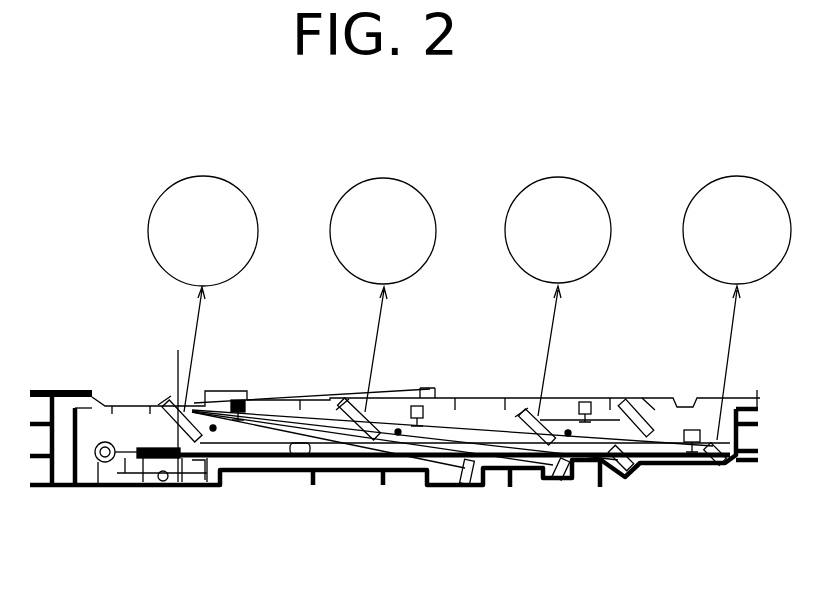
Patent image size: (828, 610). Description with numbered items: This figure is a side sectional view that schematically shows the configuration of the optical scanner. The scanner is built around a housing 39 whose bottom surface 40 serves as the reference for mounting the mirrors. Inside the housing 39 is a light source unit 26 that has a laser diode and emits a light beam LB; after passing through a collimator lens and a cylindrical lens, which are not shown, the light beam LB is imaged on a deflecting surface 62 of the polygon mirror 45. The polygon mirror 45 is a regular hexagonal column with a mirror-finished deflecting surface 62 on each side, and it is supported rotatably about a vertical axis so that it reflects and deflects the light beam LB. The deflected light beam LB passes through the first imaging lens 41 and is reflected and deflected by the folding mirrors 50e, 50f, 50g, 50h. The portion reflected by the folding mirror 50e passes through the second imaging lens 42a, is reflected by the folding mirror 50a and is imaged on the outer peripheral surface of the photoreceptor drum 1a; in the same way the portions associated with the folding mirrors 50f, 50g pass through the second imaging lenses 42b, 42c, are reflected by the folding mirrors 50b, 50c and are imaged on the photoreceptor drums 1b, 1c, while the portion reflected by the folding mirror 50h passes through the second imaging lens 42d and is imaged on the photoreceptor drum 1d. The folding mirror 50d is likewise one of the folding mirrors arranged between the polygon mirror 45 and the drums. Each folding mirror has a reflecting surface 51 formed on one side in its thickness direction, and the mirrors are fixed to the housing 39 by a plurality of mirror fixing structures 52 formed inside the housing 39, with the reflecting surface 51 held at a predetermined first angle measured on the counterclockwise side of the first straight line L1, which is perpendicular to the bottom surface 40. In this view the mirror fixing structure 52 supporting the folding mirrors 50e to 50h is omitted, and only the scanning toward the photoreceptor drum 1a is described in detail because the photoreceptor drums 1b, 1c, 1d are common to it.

The photoreceptor drum 1a is at (165, 217).
The photoreceptor drum 1b is at (350, 217).
The photoreceptor drum 1c is at (523, 217).
The photoreceptor drum 1d is at (705, 217).
The light source unit 26 is at (107, 488).
The housing 39 is at (68, 488).
The bottom surface 40 is at (77, 490).
The first imaging lens 41 is at (304, 490).
The second imaging lens 42a is at (238, 399).
The second imaging lens 42b is at (418, 402).
The second imaging lens 42c is at (586, 400).
The second imaging lens 42d is at (690, 462).
The polygon mirror 45 is at (162, 488).
The folding mirror 50a is at (182, 410).
The folding mirror 50b is at (360, 400).
The folding mirror 50c is at (540, 400).
The folding mirror 50d is at (625, 400).
The folding mirror 50e is at (472, 482).
The folding mirror 50f is at (560, 480).
The folding mirror 50g is at (628, 479).
The folding mirror 50h is at (716, 468).
The reflecting surface 51 is at (207, 490).
The mirror fixing structure 52 is at (172, 405).
The deflecting surface 62 is at (185, 490).
The first straight line L1 is at (173, 404).
The light beam LB is at (127, 490).